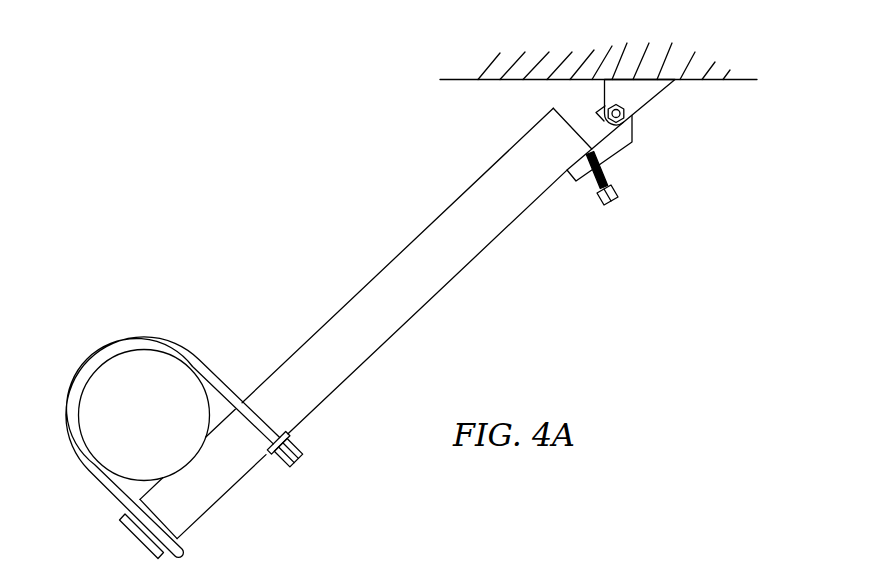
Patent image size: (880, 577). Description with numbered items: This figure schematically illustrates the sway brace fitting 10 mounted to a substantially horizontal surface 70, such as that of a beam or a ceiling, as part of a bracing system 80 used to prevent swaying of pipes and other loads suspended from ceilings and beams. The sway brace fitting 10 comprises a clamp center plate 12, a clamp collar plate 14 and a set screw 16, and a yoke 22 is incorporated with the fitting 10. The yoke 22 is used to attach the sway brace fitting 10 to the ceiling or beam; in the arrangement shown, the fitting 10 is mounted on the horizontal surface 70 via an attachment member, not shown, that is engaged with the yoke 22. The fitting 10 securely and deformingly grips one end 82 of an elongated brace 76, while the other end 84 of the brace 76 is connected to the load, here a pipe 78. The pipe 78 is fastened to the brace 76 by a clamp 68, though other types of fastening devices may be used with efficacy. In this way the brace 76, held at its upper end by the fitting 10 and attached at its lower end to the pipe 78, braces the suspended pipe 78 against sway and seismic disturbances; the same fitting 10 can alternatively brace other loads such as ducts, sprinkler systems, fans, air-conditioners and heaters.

The sway brace fitting 10 is at (588, 162).
The clamp center plate 12 is at (616, 160).
The clamp collar plate 14 is at (633, 144).
The set screw 16 is at (584, 186).
The yoke 22 is at (612, 90).
The clamp 68 is at (83, 452).
The horizontal surface 70 is at (705, 82).
The brace 76 is at (366, 333).
The pipe 78 is at (129, 393).
The bracing system 80 is at (317, 333).
The one end of the brace 82 is at (557, 135).
The other end of the brace 84 is at (213, 490).